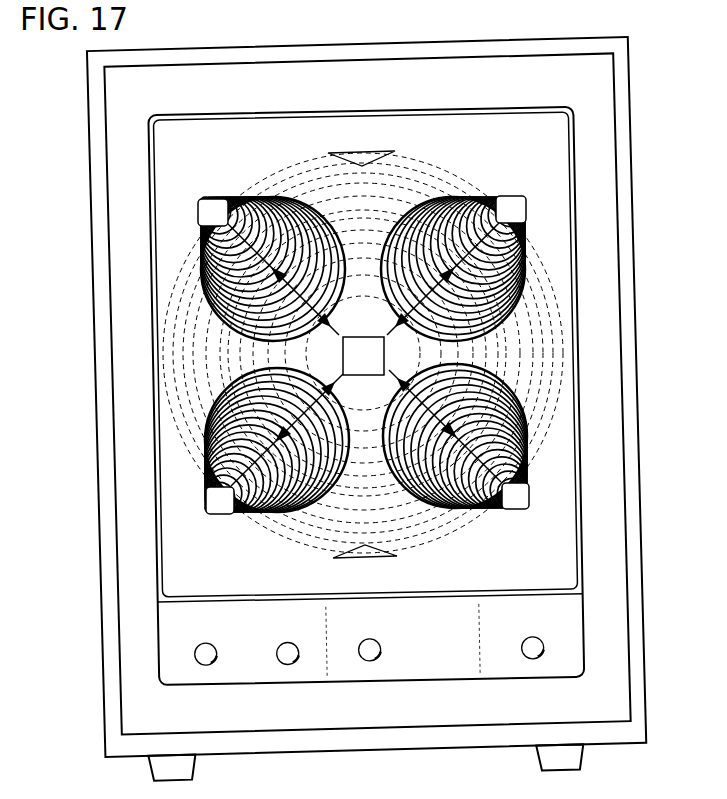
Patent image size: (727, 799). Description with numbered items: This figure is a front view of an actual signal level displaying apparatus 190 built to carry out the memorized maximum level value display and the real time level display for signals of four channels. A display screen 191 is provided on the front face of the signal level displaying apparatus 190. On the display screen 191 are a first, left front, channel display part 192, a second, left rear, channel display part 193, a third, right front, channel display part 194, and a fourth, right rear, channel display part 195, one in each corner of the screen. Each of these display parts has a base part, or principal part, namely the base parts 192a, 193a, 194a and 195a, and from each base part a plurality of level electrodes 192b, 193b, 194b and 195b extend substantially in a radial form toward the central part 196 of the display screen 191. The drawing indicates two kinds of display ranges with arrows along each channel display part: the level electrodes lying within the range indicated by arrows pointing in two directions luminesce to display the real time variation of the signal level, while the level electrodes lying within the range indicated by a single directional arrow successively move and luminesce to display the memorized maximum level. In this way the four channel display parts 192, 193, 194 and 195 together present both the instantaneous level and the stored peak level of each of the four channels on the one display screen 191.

The signal level displaying apparatus 190 is at (88, 177).
The display screen 191 is at (420, 530).
The first (left front) channel display part 192 is at (242, 194).
The base part (principal part) of first channel display part 192a is at (205, 199).
The level electrodes of first channel display part 192b is at (258, 199).
The second (left rear) channel display part 193 is at (198, 481).
The base part (principal part) of second channel display part 193a is at (214, 515).
The level electrodes of second channel display part 193b is at (292, 522).
The third (right front) channel display part 194 is at (468, 186).
The base part (principal part) of third channel display part 194a is at (509, 196).
The level electrodes of third channel display part 194b is at (452, 176).
The fourth (right rear) channel display part 195 is at (532, 476).
The base part (principal part) of fourth channel display part 195a is at (528, 512).
The level electrodes of fourth channel display part 195b is at (462, 512).
The central part of the display screen 196 is at (384, 356).